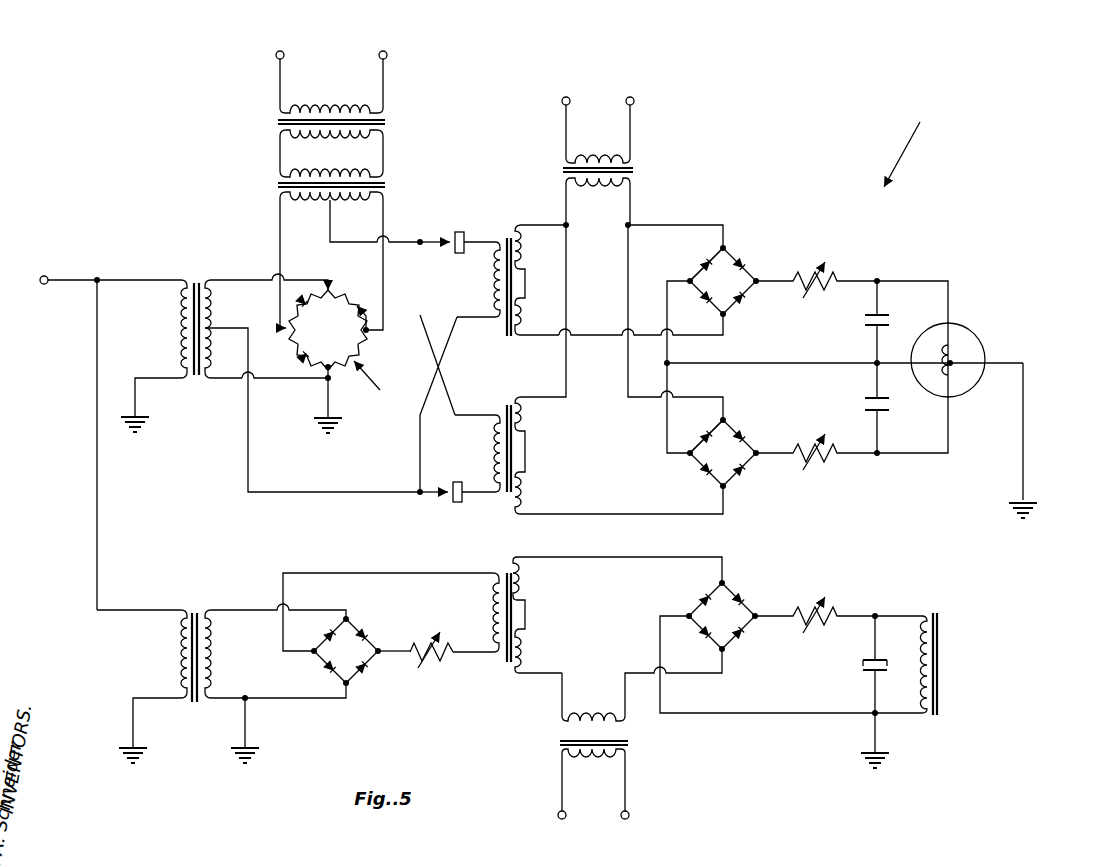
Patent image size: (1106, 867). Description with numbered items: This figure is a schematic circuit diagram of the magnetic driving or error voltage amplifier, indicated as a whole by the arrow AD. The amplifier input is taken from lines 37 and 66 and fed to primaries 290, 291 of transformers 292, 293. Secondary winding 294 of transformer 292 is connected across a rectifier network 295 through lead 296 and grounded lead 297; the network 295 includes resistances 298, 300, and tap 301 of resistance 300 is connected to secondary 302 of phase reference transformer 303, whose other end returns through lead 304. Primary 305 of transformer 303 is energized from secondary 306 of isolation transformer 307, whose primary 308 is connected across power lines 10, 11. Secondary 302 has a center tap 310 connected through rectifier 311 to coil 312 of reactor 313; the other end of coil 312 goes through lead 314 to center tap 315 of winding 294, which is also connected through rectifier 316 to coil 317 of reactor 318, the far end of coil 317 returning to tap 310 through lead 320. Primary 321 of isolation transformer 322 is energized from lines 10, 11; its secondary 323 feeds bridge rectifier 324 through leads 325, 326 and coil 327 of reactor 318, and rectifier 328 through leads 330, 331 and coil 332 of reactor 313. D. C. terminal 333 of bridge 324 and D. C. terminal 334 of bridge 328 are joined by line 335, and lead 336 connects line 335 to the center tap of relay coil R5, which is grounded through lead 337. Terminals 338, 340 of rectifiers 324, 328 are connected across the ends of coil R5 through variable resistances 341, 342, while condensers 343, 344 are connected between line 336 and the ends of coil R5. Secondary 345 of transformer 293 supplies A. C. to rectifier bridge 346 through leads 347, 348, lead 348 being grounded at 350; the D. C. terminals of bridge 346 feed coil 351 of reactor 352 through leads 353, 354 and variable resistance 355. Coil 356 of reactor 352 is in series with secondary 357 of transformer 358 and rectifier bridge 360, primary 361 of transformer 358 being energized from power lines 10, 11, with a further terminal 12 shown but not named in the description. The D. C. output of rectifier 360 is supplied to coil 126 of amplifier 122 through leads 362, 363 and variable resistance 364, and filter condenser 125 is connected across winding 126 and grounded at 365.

The power line 10 is at (285, 58).
The power line 11 is at (388, 58).
The power supply terminal 12 is at (629, 812).
The input line 37 is at (80, 279).
The input line 66 is at (163, 379).
The amplifier 122 is at (940, 611).
The filter condenser 125 is at (873, 678).
The coil of amplifier 126 is at (918, 614).
The primary 290 is at (179, 335).
The primary 291 is at (180, 654).
The transformer 292 is at (200, 278).
The transformer 293 is at (196, 610).
The secondary winding 294 is at (220, 297).
The rectifier network 295 is at (378, 382).
The lead 296 is at (320, 280).
The grounded lead 297 is at (284, 378).
The resistance 298 is at (360, 300).
The resistance 300 is at (328, 361).
The tap 301 is at (280, 316).
The secondary 302 is at (316, 203).
The phase reference transformer 303 is at (272, 180).
The lead 304 is at (385, 285).
The primary 305 is at (365, 172).
The secondary 306 is at (293, 137).
The isolation transformer 307 is at (272, 118).
The primary 308 is at (352, 107).
The center tap 310 is at (408, 242).
The rectifier 311 is at (462, 232).
The coil 312 is at (490, 270).
The reactor 313 is at (510, 234).
The lead 314 is at (419, 434).
The center tap 315 is at (248, 465).
The rectifier 316 is at (455, 503).
The coil 317 is at (492, 452).
The reactor 318 is at (510, 404).
The lead 320 is at (439, 378).
The primary 321 is at (595, 155).
The isolation transformer 322 is at (637, 165).
The secondary 323 is at (599, 188).
The bridge rectifier 324 is at (732, 428).
The lead 325 is at (626, 388).
The lead 326 is at (567, 300).
The coil 327 is at (528, 444).
The rectifier 328 is at (732, 257).
The lead 330 is at (695, 224).
The lead 331 is at (592, 335).
The coil 332 is at (525, 272).
The D. C. terminal 333 is at (698, 444).
The D. C. terminal 334 is at (698, 271).
The line 335 is at (676, 348).
The lead 336 is at (821, 360).
The lead 337 is at (1023, 406).
The terminal 338 is at (769, 458).
The terminal 340 is at (779, 276).
The variable resistance 341 is at (826, 454).
The variable resistance 342 is at (837, 272).
The condenser 343 is at (889, 415).
The condenser 344 is at (884, 316).
The secondary 345 is at (212, 659).
The rectifier bridge 346 is at (368, 636).
The lead 347 is at (251, 610).
The lead 348 is at (327, 693).
The ground 350 is at (242, 730).
The coil 351 is at (493, 603).
The reactor 352 is at (508, 665).
The lead 353 is at (426, 573).
The lead 354 is at (382, 653).
The variable resistance 355 is at (450, 658).
The coil 356 is at (528, 614).
The secondary 357 is at (593, 717).
The transformer 358 is at (633, 740).
The rectifier bridge 360 is at (731, 585).
The primary 361 is at (595, 758).
The lead 362 is at (774, 709).
The lead 363 is at (778, 613).
The variable resistance 364 is at (836, 611).
The ground 365 is at (879, 735).
The relay coil R5 is at (973, 336).
The amplifier-detector unit AD is at (912, 142).